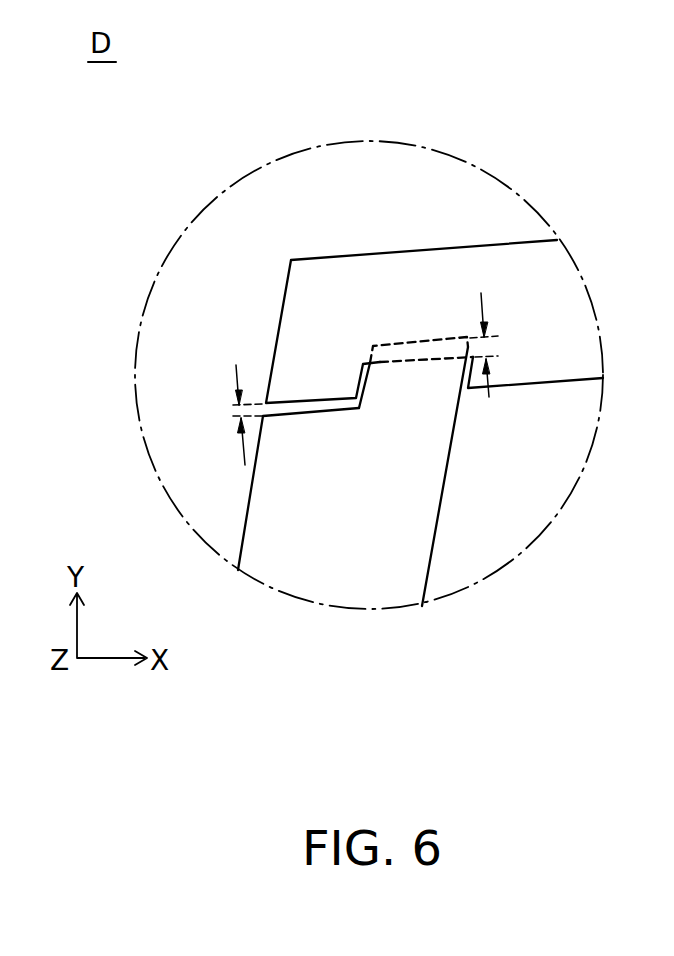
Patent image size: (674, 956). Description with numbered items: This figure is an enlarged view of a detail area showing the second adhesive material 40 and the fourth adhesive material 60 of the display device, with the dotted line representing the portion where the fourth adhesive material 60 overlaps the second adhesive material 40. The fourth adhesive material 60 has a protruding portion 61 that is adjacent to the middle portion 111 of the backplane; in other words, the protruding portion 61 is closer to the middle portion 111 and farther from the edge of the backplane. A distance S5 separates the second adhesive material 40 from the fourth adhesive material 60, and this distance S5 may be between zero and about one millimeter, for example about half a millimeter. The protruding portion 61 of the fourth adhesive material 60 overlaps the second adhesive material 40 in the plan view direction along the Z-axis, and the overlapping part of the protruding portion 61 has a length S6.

The second adhesive material 40 is at (572, 305).
The fourth adhesive material 60 is at (272, 502).
The protruding portion 61 is at (388, 380).
The distance S5 is at (236, 409).
The length S6 is at (487, 347).
The middle portion 111 is at (558, 470).